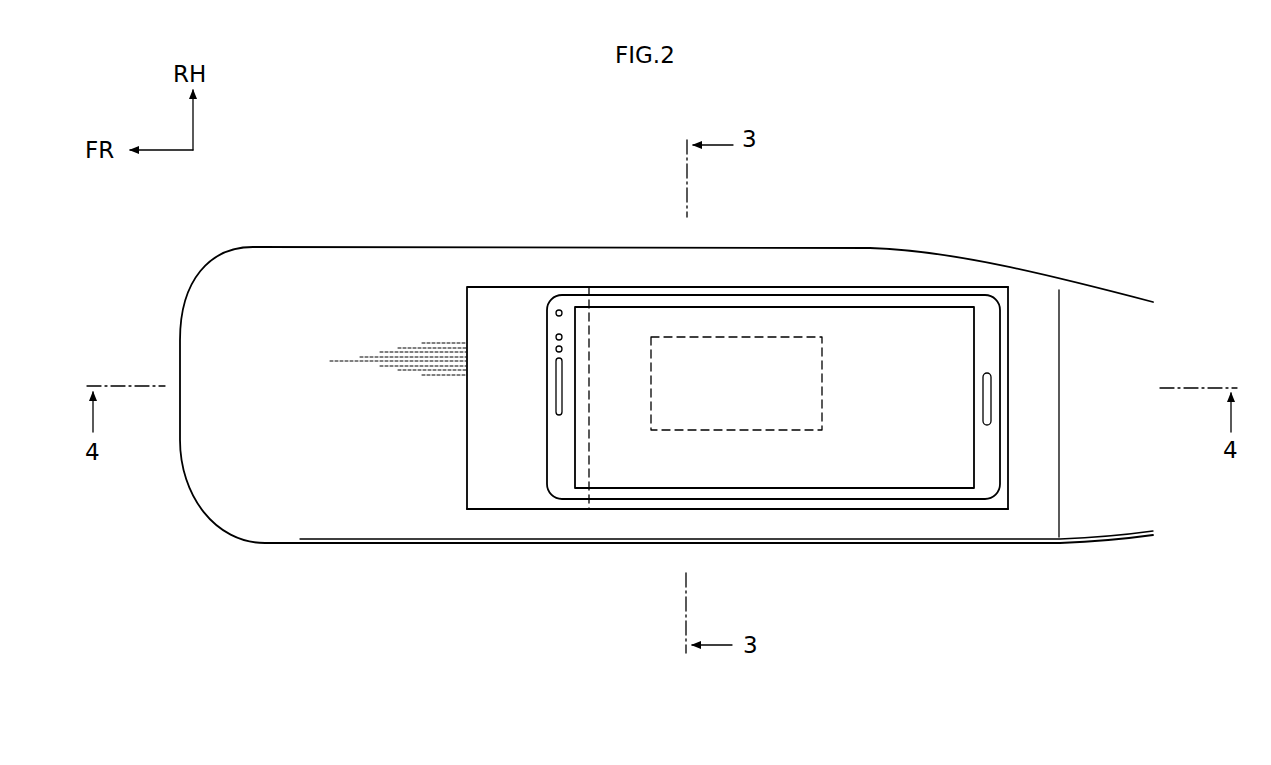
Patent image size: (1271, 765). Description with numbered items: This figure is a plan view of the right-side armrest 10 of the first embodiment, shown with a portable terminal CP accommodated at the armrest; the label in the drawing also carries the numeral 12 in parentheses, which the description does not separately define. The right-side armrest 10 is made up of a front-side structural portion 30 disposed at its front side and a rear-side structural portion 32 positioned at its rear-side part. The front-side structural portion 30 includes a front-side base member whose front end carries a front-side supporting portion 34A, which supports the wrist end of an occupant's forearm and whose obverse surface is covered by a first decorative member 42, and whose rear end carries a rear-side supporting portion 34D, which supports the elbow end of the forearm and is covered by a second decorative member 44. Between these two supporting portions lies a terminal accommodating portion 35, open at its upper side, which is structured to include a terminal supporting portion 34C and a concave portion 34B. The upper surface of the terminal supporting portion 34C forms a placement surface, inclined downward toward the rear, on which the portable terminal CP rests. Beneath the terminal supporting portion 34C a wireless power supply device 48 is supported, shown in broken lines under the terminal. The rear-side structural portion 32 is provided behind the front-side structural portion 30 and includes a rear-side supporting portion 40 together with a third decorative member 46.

The right-side armrest 10 is at (525, 319).
The vehicle body 12 is at (525, 395).
The front-side structural portion 30 is at (540, 562).
The rear-side structural portion 32 is at (1122, 560).
The front-side supporting portion 34A is at (343, 298).
The concave portion 34B is at (507, 315).
The terminal supporting portion 34C is at (883, 504).
The rear-side supporting portion 34D is at (1035, 340).
The terminal accommodating portion 35 is at (505, 469).
The rear-side supporting portion 40 is at (1117, 340).
The first decorative member 42 is at (338, 547).
The second decorative member 44 is at (1008, 548).
The third decorative member 46 is at (1090, 283).
The wireless power supply device 48 is at (775, 337).
The portable terminal CP is at (935, 300).